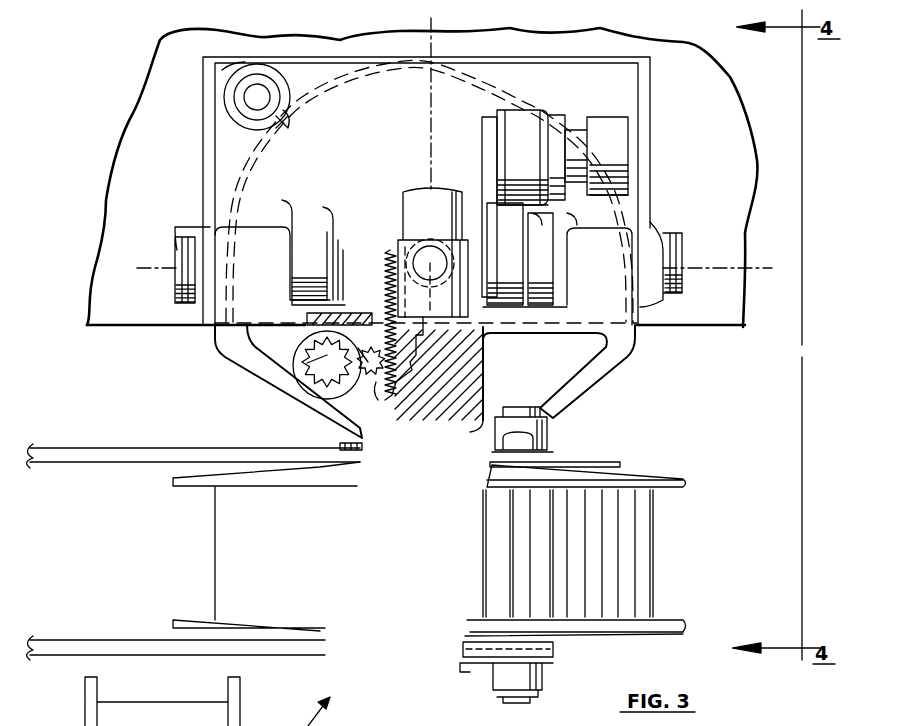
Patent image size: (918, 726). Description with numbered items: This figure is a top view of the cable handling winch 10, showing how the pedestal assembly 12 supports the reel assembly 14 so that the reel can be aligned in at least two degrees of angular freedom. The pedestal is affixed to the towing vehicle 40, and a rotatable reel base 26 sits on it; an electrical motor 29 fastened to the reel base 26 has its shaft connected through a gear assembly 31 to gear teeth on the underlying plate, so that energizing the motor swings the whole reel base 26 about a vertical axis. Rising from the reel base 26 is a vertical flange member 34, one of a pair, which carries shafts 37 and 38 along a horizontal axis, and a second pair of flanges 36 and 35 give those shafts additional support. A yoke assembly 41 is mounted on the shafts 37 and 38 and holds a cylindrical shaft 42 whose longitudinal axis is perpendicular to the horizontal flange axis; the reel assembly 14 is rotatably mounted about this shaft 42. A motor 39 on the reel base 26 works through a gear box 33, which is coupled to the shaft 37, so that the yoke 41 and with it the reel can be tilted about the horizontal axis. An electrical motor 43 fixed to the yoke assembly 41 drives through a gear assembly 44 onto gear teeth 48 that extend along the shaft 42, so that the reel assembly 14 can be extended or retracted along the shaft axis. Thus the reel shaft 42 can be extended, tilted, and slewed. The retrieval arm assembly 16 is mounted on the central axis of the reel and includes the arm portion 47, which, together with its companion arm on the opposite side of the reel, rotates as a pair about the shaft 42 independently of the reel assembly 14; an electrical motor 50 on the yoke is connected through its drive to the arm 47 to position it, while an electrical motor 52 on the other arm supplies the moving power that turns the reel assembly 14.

The winch 10 is at (335, 48).
The pedestal assembly 12 is at (293, 188).
The reel assembly 14 is at (753, 478).
The retrieval arm assembly 16 is at (210, 565).
The rotatable reel base 26 is at (383, 136).
The electrical motor 29 is at (222, 80).
The gear assembly 31 is at (296, 129).
The gear box 33 is at (494, 200).
The vertical flange member 34 is at (213, 123).
The flange 35 is at (545, 263).
The flange 36 is at (300, 268).
The shaft 37 is at (672, 281).
The shaft 38 is at (178, 279).
The motor 39 is at (532, 158).
The towing vehicle 40 is at (710, 183).
The yoke assembly 41 is at (637, 333).
The cylindrical shaft 42 is at (416, 195).
The electrical motor 43 is at (303, 358).
The gear assembly 44 is at (383, 404).
The arm portion 47 is at (73, 453).
The gear teeth 48 is at (388, 252).
The electrical motor 50 is at (535, 433).
The electrical motor 52 is at (540, 684).